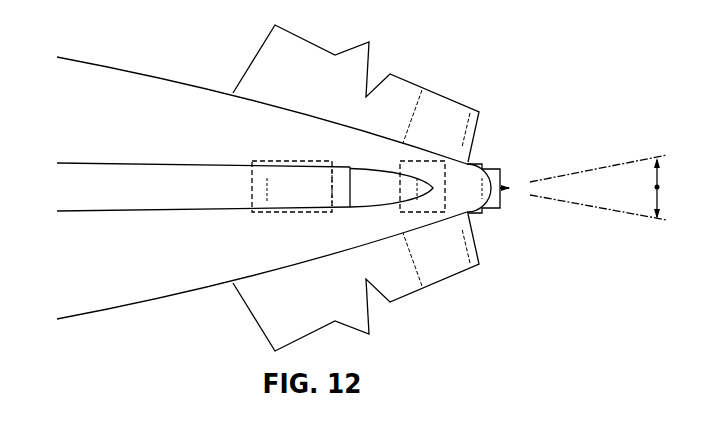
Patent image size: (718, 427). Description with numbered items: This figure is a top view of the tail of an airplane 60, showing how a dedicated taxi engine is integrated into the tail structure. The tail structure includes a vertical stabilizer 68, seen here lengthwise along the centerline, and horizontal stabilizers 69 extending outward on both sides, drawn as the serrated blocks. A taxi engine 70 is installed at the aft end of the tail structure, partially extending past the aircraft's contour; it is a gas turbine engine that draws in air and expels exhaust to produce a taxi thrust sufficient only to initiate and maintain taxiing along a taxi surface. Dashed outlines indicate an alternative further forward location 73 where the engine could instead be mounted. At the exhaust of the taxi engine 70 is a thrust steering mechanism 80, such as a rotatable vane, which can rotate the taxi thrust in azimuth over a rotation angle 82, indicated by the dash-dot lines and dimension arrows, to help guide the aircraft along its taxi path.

The airplane 60 is at (113, 310).
The vertical stabilizer 68 is at (165, 160).
The horizontal stabilizers 69 is at (477, 140).
The taxi engine 70 is at (488, 213).
The further forward location 73 is at (253, 222).
The thrust steering mechanism 80 is at (509, 178).
The rotation angle 82 is at (657, 187).